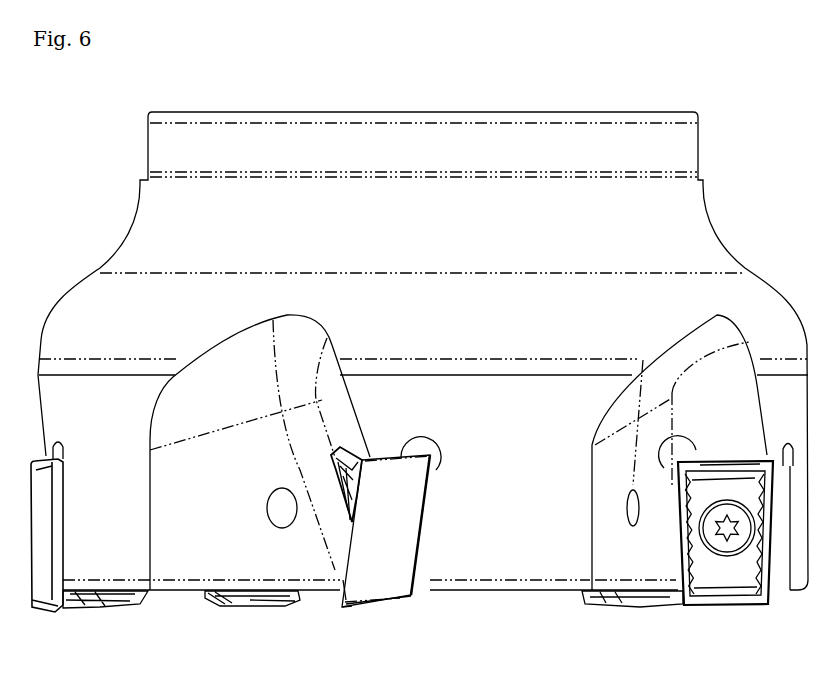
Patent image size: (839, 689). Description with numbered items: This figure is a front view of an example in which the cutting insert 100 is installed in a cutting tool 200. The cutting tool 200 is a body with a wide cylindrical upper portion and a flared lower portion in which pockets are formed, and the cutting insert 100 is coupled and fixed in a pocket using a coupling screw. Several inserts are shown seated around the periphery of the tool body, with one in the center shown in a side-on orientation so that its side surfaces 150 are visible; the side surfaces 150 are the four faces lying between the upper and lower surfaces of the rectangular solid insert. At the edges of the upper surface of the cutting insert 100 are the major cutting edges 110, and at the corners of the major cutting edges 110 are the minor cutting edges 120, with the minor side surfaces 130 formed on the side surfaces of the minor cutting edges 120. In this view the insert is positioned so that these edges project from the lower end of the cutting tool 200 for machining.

The cutting tool 200 is at (231, 106).
The cutting insert 100 is at (60, 612).
The side surfaces 150 is at (338, 485).
The major cutting edges 110 is at (342, 583).
The minor cutting edges 120 is at (343, 606).
The minor side surfaces 130 is at (357, 609).